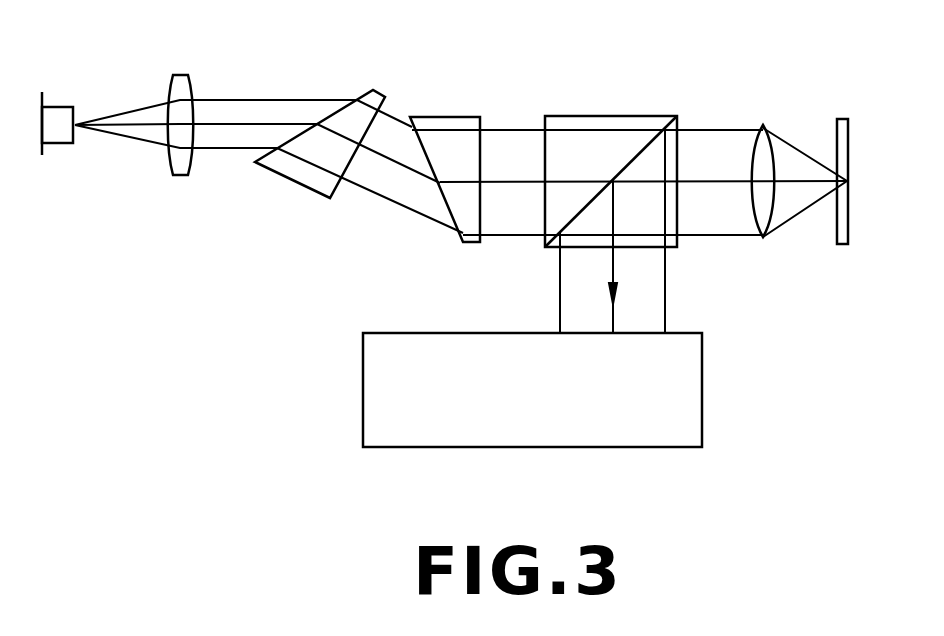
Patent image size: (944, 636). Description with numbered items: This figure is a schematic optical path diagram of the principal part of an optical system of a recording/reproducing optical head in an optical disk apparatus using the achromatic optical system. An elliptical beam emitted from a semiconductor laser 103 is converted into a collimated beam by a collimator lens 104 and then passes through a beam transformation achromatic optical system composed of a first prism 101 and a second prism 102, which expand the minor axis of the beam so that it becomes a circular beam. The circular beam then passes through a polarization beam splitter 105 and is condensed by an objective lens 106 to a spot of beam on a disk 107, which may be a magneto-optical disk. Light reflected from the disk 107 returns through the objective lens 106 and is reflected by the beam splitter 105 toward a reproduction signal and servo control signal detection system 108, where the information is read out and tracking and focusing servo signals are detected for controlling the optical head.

The first prism 101 is at (360, 90).
The second prism 102 is at (452, 116).
The semiconductor laser 103 is at (52, 100).
The collimator lens 104 is at (184, 72).
The polarization beam splitter 105 is at (597, 115).
The objective lens 106 is at (763, 122).
The disk 107 is at (845, 114).
The reproduction signal and servo control signal detection system 108 is at (703, 368).